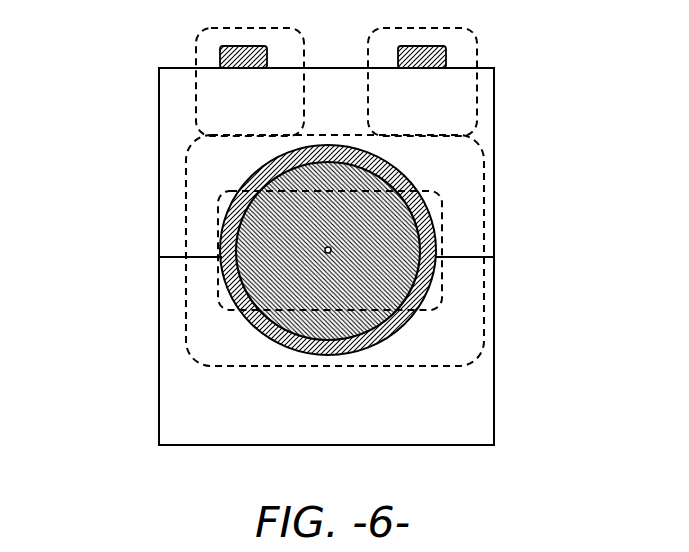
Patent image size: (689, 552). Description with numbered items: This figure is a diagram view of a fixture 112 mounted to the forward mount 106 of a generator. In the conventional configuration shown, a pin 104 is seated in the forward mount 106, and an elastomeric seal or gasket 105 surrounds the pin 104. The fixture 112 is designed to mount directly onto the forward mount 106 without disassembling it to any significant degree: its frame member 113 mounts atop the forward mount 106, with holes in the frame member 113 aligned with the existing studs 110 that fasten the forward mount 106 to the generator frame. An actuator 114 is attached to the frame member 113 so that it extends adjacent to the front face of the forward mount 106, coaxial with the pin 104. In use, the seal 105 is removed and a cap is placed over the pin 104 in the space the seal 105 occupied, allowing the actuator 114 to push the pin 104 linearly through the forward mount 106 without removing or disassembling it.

The pin 104 is at (435, 242).
The seal 105 is at (338, 342).
The forward mount 106 is at (159, 135).
The studs 110 is at (446, 55).
The fixture 112 is at (186, 272).
The frame member 113 is at (196, 43).
The actuator 114 is at (442, 292).